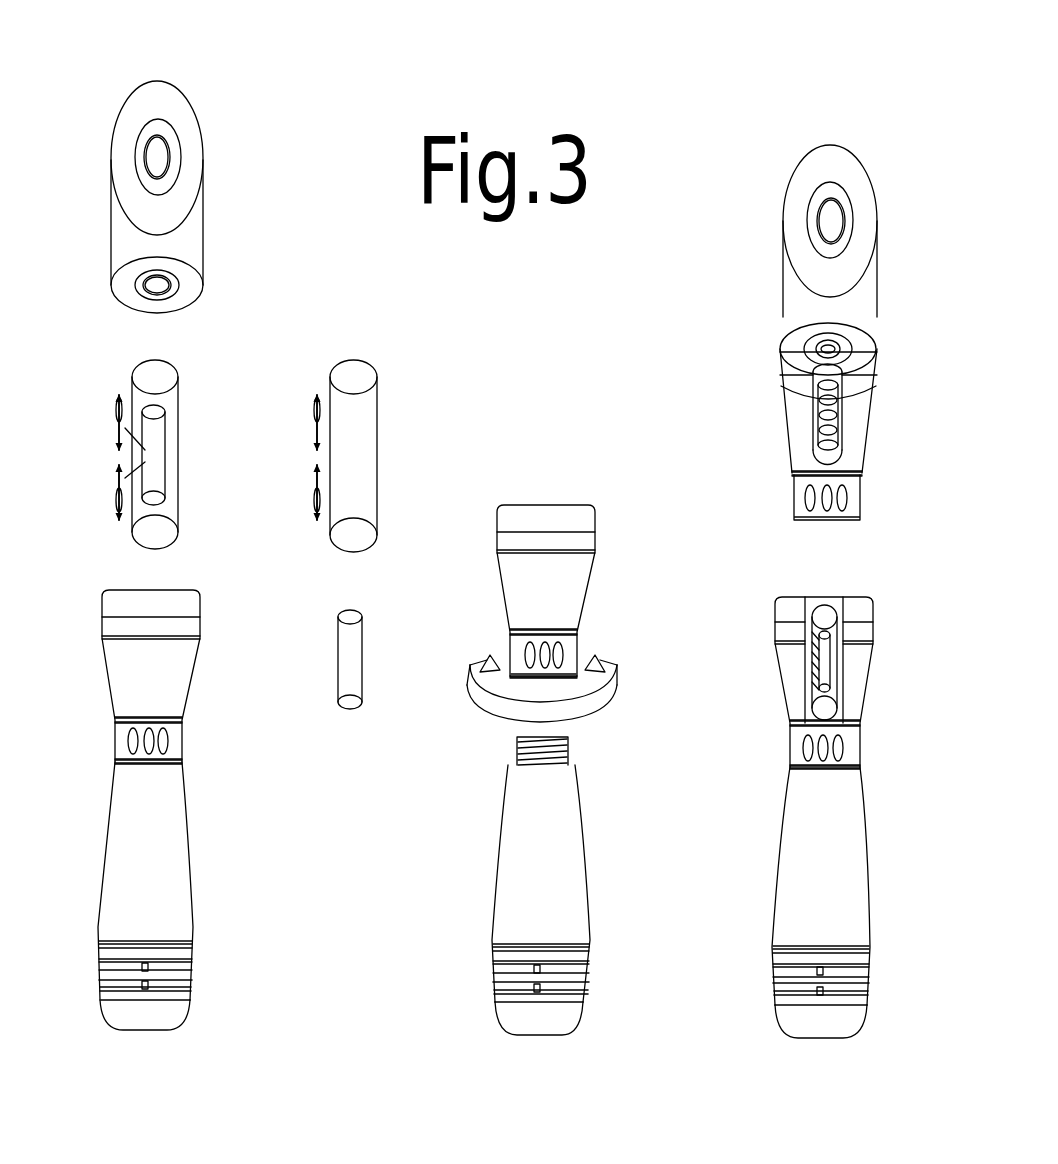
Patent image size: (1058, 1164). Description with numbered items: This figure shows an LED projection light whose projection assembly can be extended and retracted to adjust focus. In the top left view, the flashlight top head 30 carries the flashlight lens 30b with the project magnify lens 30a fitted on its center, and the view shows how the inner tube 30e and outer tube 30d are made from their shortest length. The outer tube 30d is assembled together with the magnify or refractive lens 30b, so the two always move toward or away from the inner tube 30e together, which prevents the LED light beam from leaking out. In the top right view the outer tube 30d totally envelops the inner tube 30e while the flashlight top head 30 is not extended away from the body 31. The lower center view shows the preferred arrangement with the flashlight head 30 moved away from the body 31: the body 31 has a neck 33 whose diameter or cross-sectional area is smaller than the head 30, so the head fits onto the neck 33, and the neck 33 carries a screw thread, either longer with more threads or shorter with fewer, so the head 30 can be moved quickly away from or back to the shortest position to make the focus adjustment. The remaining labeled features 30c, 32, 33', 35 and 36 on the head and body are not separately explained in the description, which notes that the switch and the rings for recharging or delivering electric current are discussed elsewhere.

The flashlight top head 30 is at (118, 100).
The project magnify lens 30a is at (157, 157).
The flashlight lens 30b is at (118, 157).
The bore 30c is at (140, 175).
The outer tube 30d is at (188, 418).
The inner tube 30e is at (158, 477).
The body 31 is at (192, 863).
The bottom end 32 is at (170, 1025).
The neck 33 is at (581, 710).
The upper ring band 33' is at (459, 568).
The ring groove 35 is at (190, 967).
The ring groove 36 is at (188, 987).